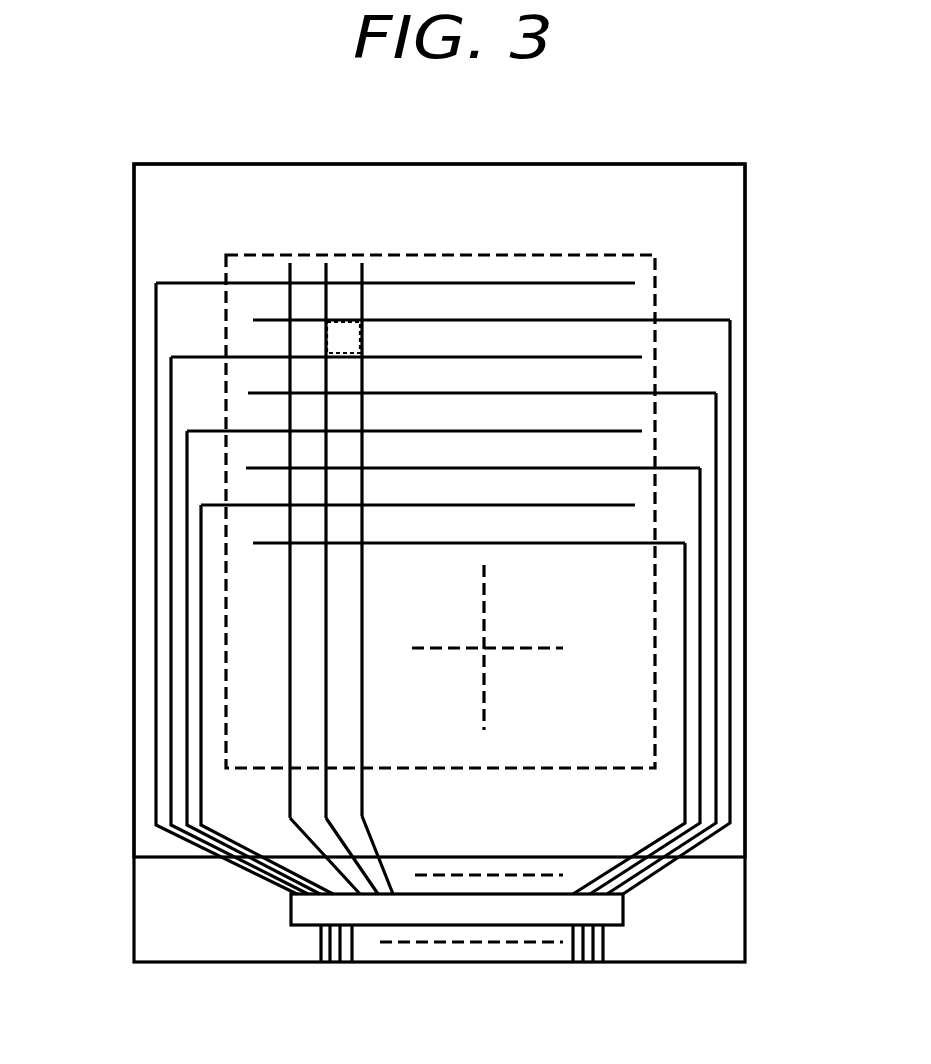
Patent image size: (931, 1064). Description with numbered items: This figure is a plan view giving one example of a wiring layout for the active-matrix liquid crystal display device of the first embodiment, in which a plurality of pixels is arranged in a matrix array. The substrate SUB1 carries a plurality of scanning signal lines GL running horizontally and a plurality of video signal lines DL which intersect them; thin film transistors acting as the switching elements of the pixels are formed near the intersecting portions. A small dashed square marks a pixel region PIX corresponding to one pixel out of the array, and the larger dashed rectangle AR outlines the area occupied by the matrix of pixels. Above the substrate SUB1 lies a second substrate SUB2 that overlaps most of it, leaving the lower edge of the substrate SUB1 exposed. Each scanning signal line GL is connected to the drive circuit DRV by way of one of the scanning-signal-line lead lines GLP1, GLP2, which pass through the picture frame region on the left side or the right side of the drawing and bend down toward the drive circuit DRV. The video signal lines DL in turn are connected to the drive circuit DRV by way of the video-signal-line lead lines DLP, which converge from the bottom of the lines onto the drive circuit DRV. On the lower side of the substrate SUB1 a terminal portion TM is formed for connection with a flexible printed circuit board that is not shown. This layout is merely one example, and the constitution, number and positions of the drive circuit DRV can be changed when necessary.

The substrate SUB1 is at (727, 962).
The second substrate SUB2 is at (693, 857).
The display area AR is at (655, 368).
The pixel region PIX is at (362, 335).
The scanning signal line GL is at (253, 357).
The scanning-signal-line lead line GLP1 is at (201, 657).
The scanning-signal-line lead line GLP2 is at (187, 573).
The video signal line DL is at (290, 730).
The video-signal-line lead line DLP is at (311, 838).
The drive circuit DRV is at (528, 915).
The terminal portion TM is at (321, 938).